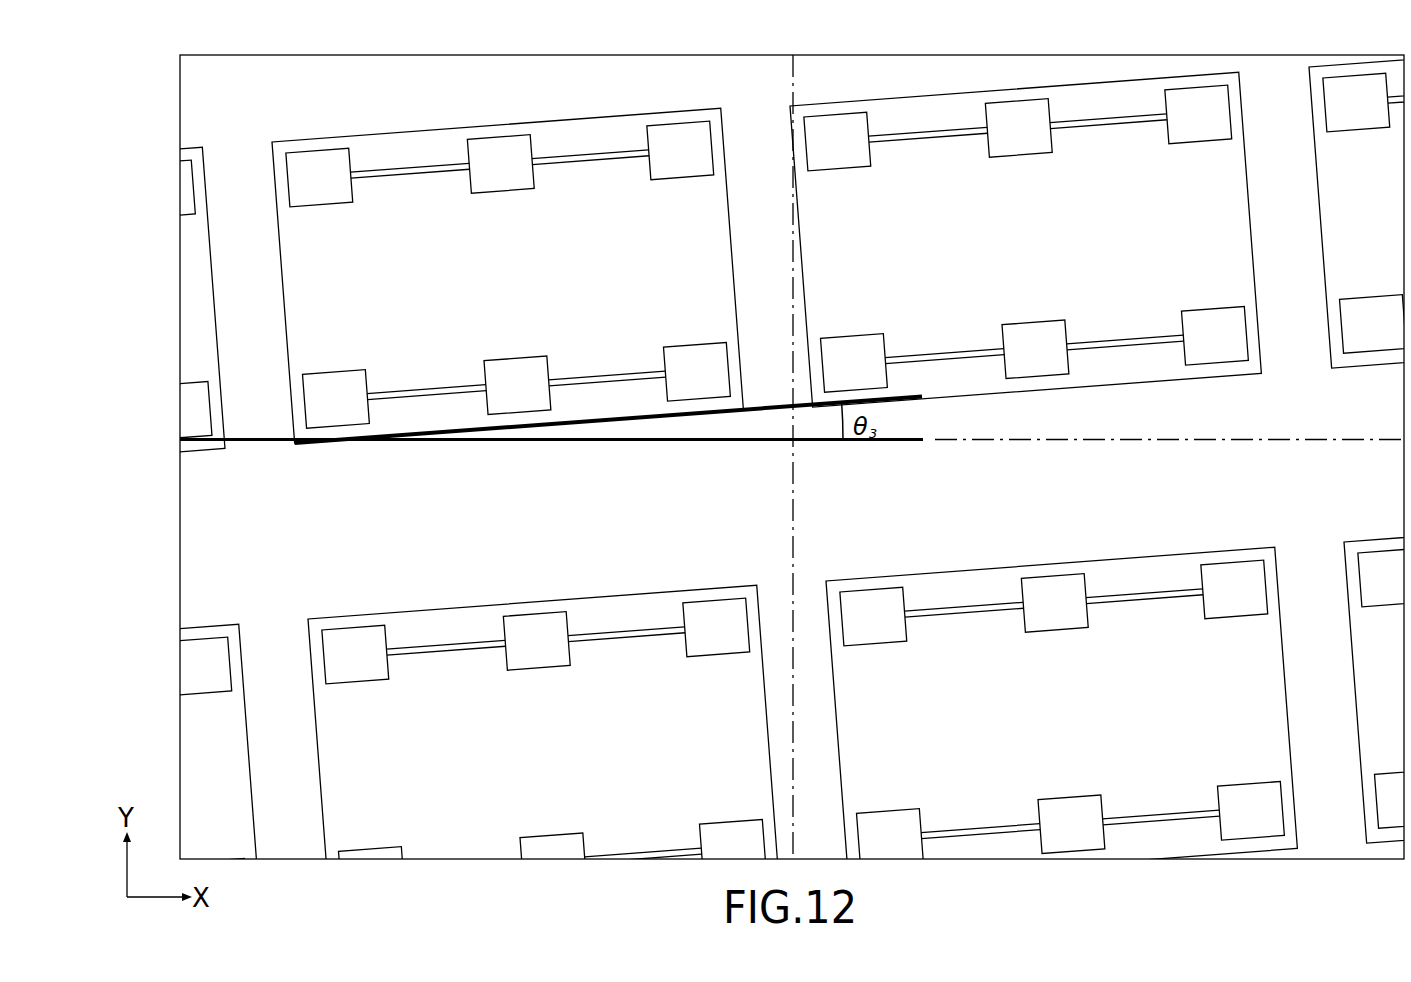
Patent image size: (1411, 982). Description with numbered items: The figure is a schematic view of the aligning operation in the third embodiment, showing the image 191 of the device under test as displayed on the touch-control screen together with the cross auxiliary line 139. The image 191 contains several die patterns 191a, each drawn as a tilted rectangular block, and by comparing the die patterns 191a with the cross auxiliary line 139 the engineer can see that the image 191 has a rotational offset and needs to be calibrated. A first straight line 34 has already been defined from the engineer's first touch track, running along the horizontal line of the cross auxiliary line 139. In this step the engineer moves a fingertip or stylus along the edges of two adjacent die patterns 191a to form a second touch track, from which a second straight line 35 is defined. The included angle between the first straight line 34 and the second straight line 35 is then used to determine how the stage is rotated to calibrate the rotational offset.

The image 191 is at (180, 70).
The die pattern 191a is at (705, 496).
The cross auxiliary line 139 is at (792, 68).
The first straight line 34 is at (497, 442).
The second straight line 35 is at (600, 424).